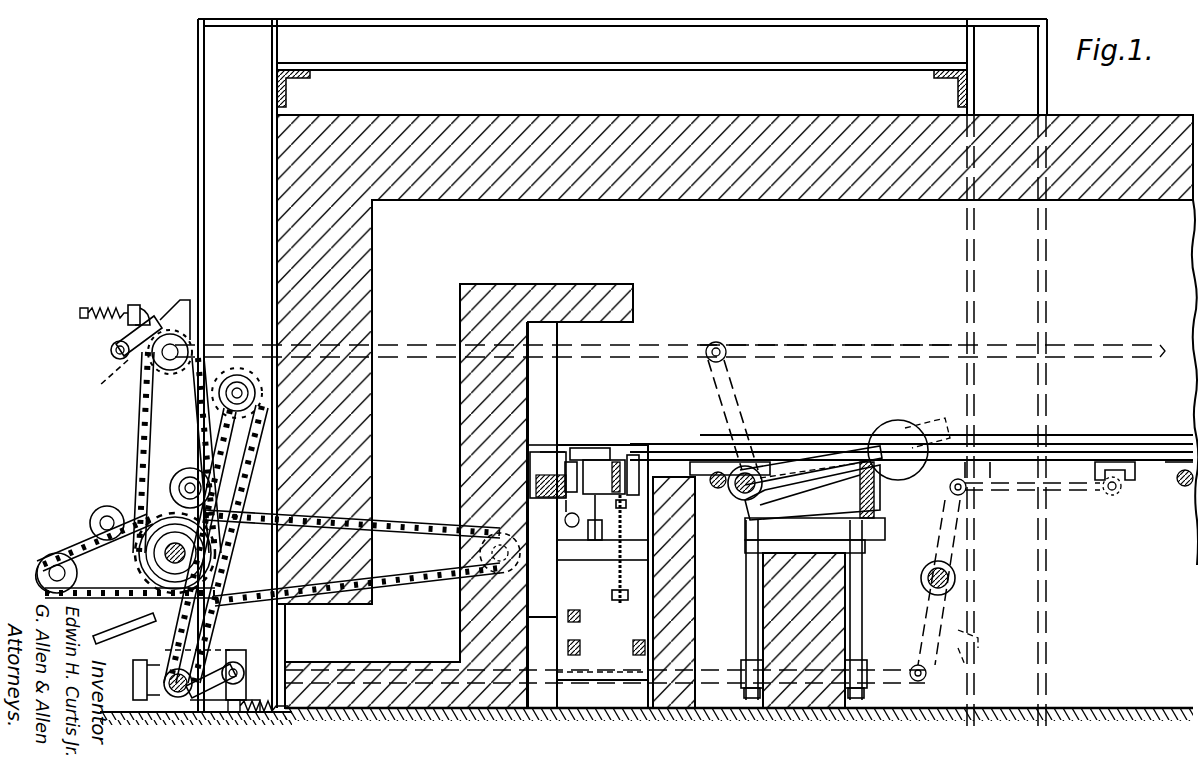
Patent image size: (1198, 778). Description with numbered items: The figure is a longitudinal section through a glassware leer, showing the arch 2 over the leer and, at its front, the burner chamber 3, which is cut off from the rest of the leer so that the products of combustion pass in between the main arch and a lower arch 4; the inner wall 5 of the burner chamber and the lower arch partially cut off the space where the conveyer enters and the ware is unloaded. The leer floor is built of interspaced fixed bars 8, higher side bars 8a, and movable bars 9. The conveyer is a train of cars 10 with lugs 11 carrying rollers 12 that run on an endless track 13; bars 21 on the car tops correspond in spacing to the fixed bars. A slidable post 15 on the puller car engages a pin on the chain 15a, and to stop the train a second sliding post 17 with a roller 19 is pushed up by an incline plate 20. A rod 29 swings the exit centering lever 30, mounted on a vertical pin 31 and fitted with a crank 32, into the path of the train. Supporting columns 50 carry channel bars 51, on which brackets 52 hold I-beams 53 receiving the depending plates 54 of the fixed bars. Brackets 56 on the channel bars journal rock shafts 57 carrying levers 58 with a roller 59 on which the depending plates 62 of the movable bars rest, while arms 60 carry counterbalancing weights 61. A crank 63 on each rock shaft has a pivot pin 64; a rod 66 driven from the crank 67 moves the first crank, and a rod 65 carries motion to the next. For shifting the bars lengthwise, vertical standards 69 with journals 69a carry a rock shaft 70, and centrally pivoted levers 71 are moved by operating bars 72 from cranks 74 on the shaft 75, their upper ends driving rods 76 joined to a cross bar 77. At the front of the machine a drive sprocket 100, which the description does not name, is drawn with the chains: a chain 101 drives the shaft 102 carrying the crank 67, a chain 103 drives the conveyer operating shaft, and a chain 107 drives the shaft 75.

The arch 2 is at (716, 196).
The burner chamber 3 is at (413, 436).
The lower arch 4 is at (522, 294).
The inner wall 5 is at (472, 383).
The fixed bars 8 is at (1118, 442).
The higher side bars 8a is at (988, 442).
The movable bars 9 is at (650, 448).
The cars 10 is at (603, 460).
The lugs 11 is at (571, 462).
The rollers 12 is at (611, 515).
The track 13 is at (633, 455).
The slidable post 15 is at (616, 462).
The chain 15a is at (624, 506).
The second sliding post 17 is at (590, 540).
The roller 19 is at (595, 560).
The incline plate 20 is at (616, 560).
The bars 21 is at (590, 448).
The rod 29 is at (565, 548).
The centering lever 30 is at (552, 452).
The vertical pin 31 is at (538, 452).
The crank 32 is at (565, 516).
The supporting columns 50 is at (842, 592).
The channel bars 51 is at (760, 574).
The brackets 52 is at (870, 528).
The I-beams 53 is at (874, 490).
The depending plates 54 is at (950, 477).
The brackets 56 is at (760, 522).
The rock shafts 57 is at (770, 470).
The levers 58 is at (748, 502).
The roller 59 is at (730, 484).
The arms 60 is at (830, 470).
The counterbalancing weights 61 is at (905, 428).
The depending plates 62 is at (700, 462).
The crank 63 is at (748, 392).
The pivot pin 64 is at (713, 347).
The rod 65 is at (785, 350).
The rod 66 is at (230, 345).
The crank 67 is at (108, 383).
The vertical standards 69 is at (1048, 278).
The journals 69a is at (978, 640).
The rock shaft 70 is at (950, 578).
The centrally pivoted levers 71 is at (916, 644).
The operating bars 72 is at (396, 708).
The cranks 74 is at (172, 668).
The shaft 75 is at (170, 706).
The rods 76 is at (1100, 494).
The cross bar 77 is at (1140, 485).
The drive sprocket 100 is at (168, 548).
The chain 101 is at (136, 426).
The shaft 102 is at (178, 340).
The chain 103 is at (405, 520).
The chain 107 is at (226, 660).